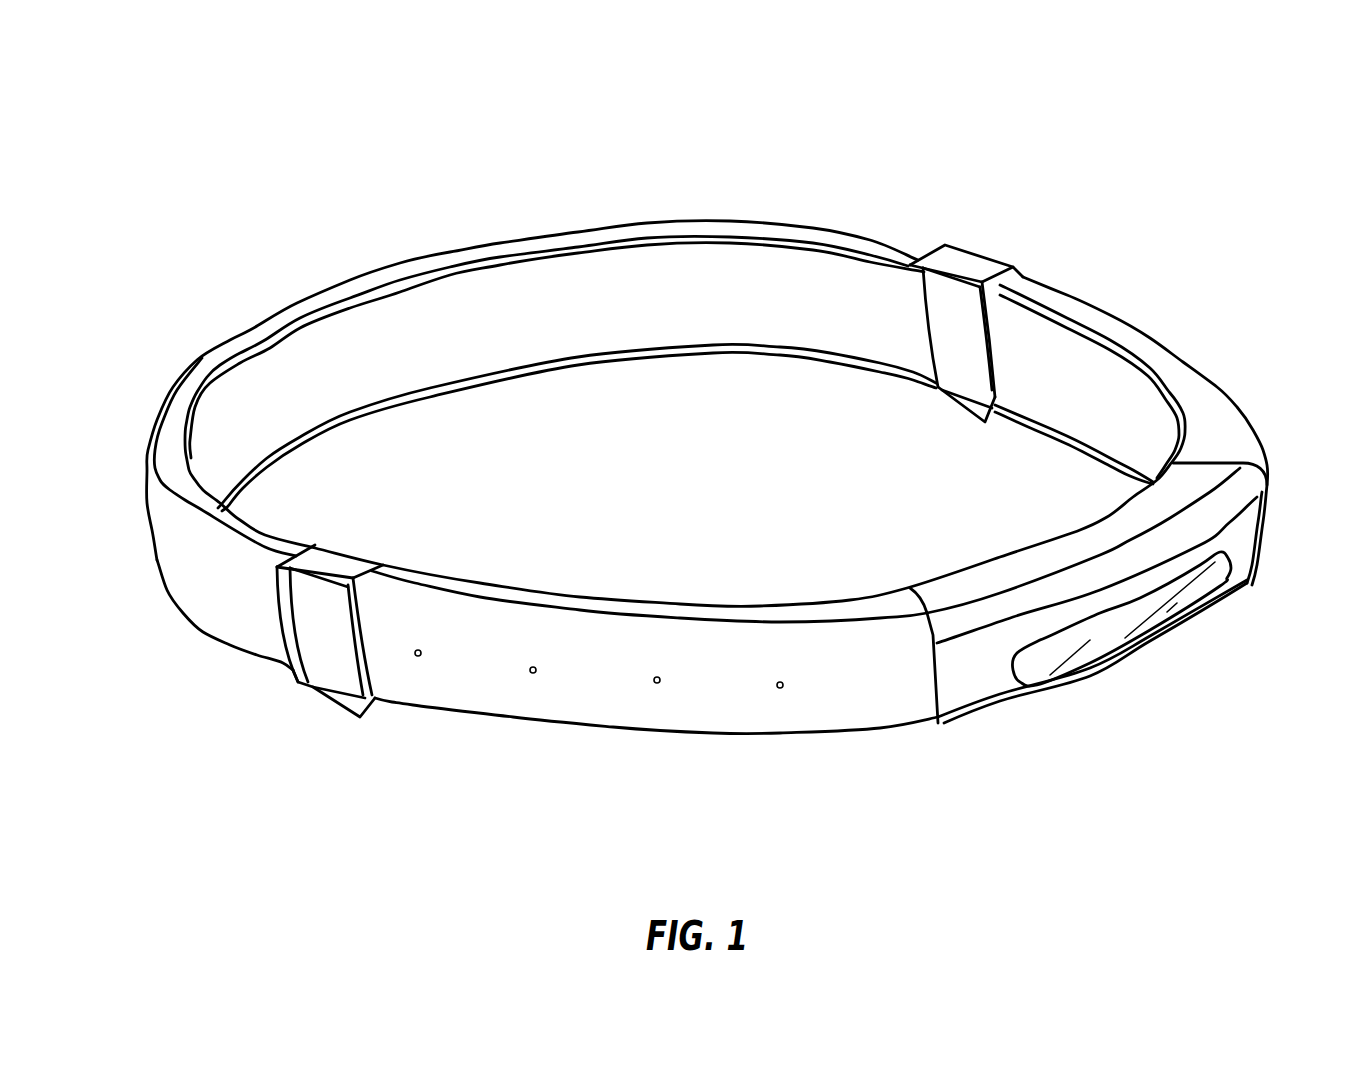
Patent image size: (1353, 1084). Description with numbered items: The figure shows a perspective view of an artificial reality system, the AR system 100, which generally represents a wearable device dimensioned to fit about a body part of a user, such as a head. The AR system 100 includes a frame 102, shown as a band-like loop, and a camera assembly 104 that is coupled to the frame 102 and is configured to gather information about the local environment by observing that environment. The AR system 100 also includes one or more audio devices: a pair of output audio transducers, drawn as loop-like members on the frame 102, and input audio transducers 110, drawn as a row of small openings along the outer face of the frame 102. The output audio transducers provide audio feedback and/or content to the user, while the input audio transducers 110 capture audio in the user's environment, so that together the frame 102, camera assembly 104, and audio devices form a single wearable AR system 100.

The AR system 100 is at (210, 123).
The frame 102 is at (651, 228).
The camera assembly 104 is at (1117, 655).
The input audio transducers 110 is at (780, 742).